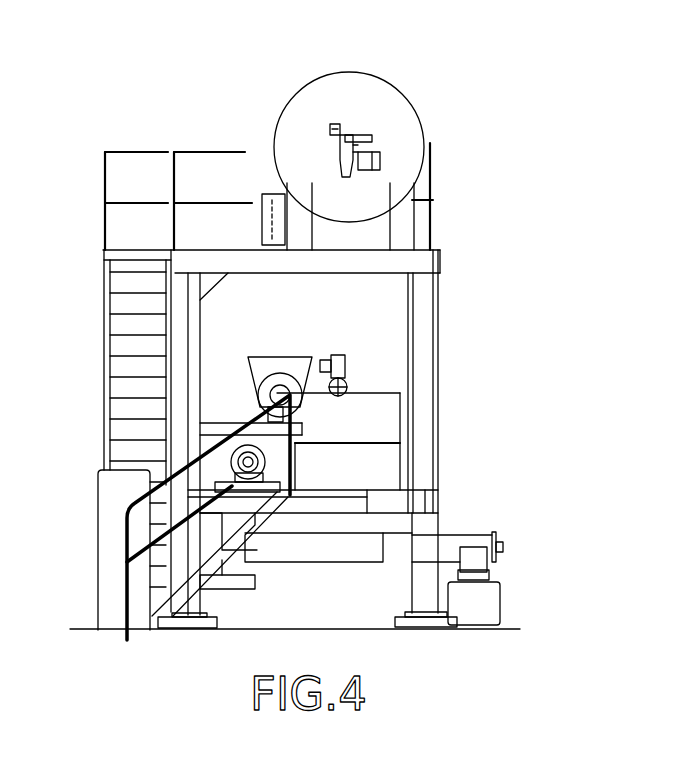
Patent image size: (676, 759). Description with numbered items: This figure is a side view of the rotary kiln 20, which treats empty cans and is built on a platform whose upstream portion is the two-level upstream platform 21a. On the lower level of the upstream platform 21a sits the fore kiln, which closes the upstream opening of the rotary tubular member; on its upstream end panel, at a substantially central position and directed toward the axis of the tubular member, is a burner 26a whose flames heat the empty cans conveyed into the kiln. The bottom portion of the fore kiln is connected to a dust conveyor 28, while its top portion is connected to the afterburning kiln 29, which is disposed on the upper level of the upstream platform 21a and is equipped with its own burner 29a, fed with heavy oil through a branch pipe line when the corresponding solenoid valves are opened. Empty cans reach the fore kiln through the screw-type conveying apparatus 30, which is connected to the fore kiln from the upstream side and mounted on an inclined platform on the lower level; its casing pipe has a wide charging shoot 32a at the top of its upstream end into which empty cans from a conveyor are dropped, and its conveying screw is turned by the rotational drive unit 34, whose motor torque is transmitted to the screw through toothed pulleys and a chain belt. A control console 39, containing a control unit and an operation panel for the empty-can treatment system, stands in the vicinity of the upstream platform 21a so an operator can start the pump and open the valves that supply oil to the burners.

The rotary kiln 20 is at (459, 91).
The afterburning kiln 29 is at (424, 133).
The burner 29a is at (357, 178).
The charging shoot 32a is at (278, 357).
The burner 26a is at (348, 373).
The screw-type conveying apparatus 30 is at (257, 397).
The rotational drive unit 34 is at (272, 473).
The upstream platform 21a is at (440, 527).
The dust conveyor 28 is at (503, 547).
The control console 39 is at (98, 526).